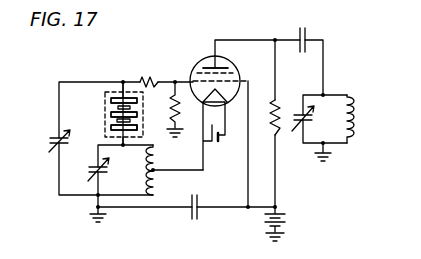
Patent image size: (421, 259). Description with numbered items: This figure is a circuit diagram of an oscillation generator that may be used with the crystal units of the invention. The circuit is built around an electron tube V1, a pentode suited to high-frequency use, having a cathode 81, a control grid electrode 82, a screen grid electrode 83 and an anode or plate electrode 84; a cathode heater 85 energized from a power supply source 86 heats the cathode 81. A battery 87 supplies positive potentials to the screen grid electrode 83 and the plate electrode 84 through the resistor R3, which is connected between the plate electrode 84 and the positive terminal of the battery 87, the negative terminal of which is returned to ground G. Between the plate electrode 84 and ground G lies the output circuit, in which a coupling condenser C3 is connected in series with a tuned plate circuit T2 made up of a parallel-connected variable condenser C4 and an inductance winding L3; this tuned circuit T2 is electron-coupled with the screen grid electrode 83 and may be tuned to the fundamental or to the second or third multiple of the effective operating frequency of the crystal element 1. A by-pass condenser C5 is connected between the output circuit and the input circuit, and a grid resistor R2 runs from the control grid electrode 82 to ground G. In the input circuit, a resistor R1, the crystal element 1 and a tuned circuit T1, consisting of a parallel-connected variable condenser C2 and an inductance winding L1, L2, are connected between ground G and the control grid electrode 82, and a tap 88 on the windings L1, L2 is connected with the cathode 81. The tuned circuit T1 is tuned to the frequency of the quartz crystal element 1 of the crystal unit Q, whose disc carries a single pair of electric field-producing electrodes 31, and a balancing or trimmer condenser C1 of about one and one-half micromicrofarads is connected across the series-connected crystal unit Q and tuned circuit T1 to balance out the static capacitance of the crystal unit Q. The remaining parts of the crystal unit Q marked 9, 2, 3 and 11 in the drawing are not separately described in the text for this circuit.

The crystal unit Q is at (112, 92).
The crystal electrode lead 9 is at (123, 82).
The crystal plate 2 is at (111, 100).
The crystal element 1 is at (111, 114).
The crystal plate 3 is at (111, 128).
The electric field-producing electrodes 31 is at (138, 127).
The crystal electrode lead 11 is at (120, 141).
The balancing or trimmer condenser C1 is at (51, 142).
The variable condenser C2 is at (106, 169).
The tuned circuit T1 is at (133, 172).
The inductance winding L1 is at (142, 164).
The inductance winding L2 is at (148, 186).
The tap 88 is at (156, 170).
The by-pass condenser C5 is at (199, 196).
The resistor R1 is at (150, 70).
The grid resistor R2 is at (178, 91).
The cathode 81 is at (175, 83).
The electron tube V1 is at (204, 57).
The anode or plate electrode 84 is at (230, 65).
The screen grid electrode 83 is at (232, 73).
The control grid electrode 82 is at (247, 82).
The cathode heater 85 is at (223, 96).
The power supply source 86 is at (220, 141).
The resistor R3 is at (265, 118).
The coupling condenser C3 is at (307, 29).
The variable condenser C4 is at (300, 112).
The inductance winding L3 is at (350, 120).
The tuned circuit T2 is at (317, 128).
The battery 87 is at (283, 218).
The ground G is at (104, 219).